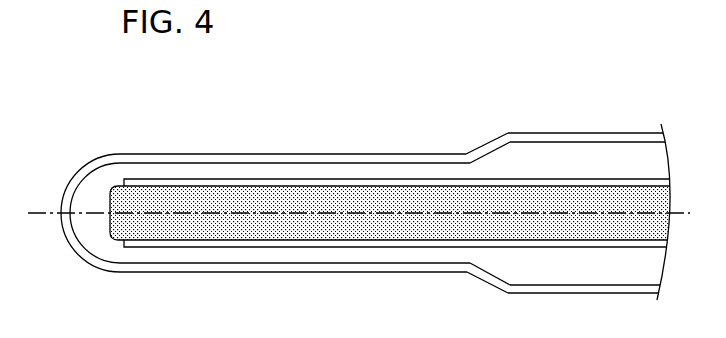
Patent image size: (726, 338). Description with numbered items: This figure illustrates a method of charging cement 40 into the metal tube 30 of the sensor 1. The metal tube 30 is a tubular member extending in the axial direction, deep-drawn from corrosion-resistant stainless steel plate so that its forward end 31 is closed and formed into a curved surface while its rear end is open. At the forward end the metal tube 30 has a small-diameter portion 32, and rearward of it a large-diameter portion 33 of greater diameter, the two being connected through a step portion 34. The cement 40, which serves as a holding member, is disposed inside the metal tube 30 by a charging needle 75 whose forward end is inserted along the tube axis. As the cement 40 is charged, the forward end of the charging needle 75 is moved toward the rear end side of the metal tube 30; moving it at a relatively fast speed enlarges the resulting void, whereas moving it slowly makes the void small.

The endoscope / medical instrument 1 is at (60, 72).
The metal tube 30 is at (531, 82).
The forward end 31 is at (64, 228).
The small-diameter portion 32 is at (428, 153).
The large-diameter portion 33 is at (577, 133).
The step portion 34 is at (487, 141).
The cement 40 is at (353, 196).
The charging needle 75 is at (227, 248).